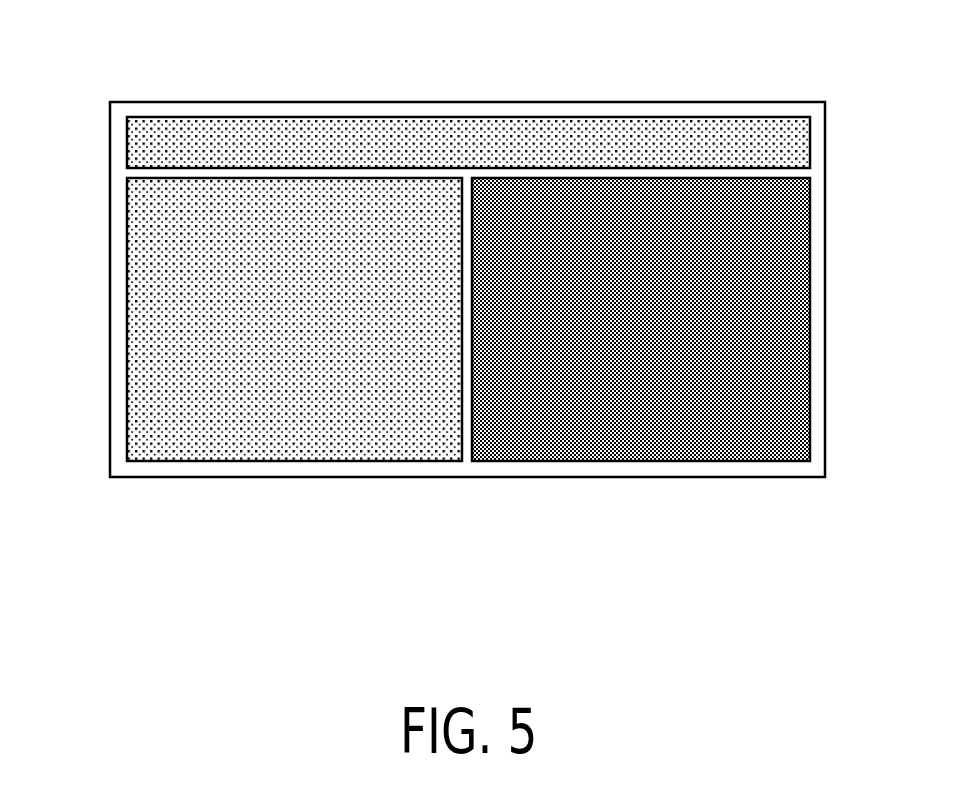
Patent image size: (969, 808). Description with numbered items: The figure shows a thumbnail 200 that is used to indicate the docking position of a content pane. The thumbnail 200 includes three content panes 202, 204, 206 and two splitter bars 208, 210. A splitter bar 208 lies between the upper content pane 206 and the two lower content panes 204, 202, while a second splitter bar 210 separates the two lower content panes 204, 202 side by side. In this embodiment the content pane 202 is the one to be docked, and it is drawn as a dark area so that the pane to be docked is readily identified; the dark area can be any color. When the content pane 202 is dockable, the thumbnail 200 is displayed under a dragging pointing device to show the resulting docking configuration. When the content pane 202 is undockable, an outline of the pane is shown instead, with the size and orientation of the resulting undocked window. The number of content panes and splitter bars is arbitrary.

The thumbnail 200 is at (471, 336).
The content pane 202 is at (818, 342).
The content pane 204 is at (117, 333).
The content pane 206 is at (377, 107).
The splitter bar 208 is at (233, 174).
The splitter bar 210 is at (463, 418).